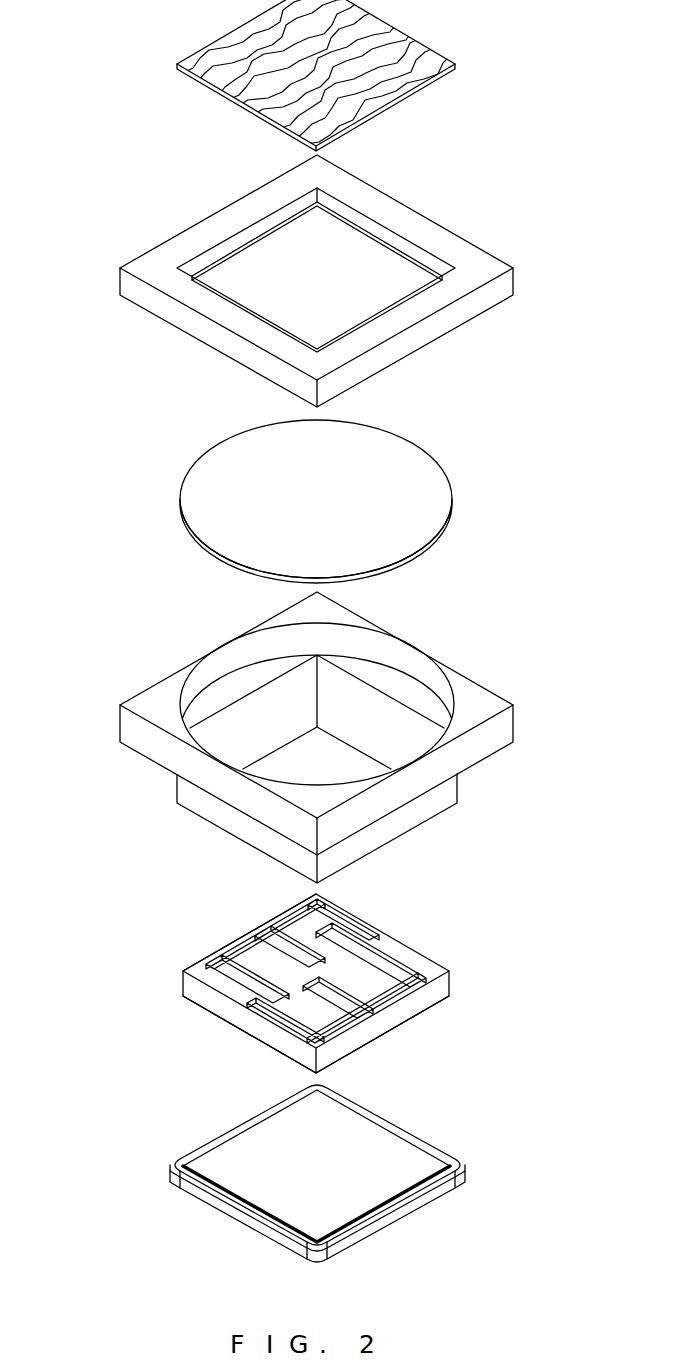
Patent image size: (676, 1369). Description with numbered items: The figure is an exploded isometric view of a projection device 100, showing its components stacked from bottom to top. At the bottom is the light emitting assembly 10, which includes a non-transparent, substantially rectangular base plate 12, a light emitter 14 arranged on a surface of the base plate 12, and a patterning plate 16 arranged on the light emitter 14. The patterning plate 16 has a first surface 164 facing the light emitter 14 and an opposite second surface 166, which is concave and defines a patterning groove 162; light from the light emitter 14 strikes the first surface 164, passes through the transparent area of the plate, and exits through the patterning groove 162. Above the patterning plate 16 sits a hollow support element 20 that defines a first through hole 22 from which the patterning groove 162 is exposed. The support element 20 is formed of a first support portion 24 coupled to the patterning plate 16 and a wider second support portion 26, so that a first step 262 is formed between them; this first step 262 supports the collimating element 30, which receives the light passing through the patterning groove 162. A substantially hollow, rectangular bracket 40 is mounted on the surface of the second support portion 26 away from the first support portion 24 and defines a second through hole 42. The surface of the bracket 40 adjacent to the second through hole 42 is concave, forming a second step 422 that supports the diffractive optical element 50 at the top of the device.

The projection device 100 is at (98, 46).
The diffractive optical element 50 is at (425, 73).
The bracket 40 is at (353, 272).
The second through hole 42 is at (337, 258).
The second step 422 is at (438, 262).
The collimating element 30 is at (410, 473).
The support element 20 is at (293, 737).
The first through hole 22 is at (331, 702).
The first step 262 is at (405, 693).
The second support portion 26 is at (163, 752).
The first support portion 24 is at (207, 808).
The patterning plate 16 is at (321, 981).
The patterning groove 162 is at (393, 983).
The first surface 164 is at (398, 1037).
The second surface 166 is at (203, 973).
The light emitting assembly 10 is at (262, 1137).
The light emitter 14 is at (250, 1145).
The base plate 12 is at (178, 1165).